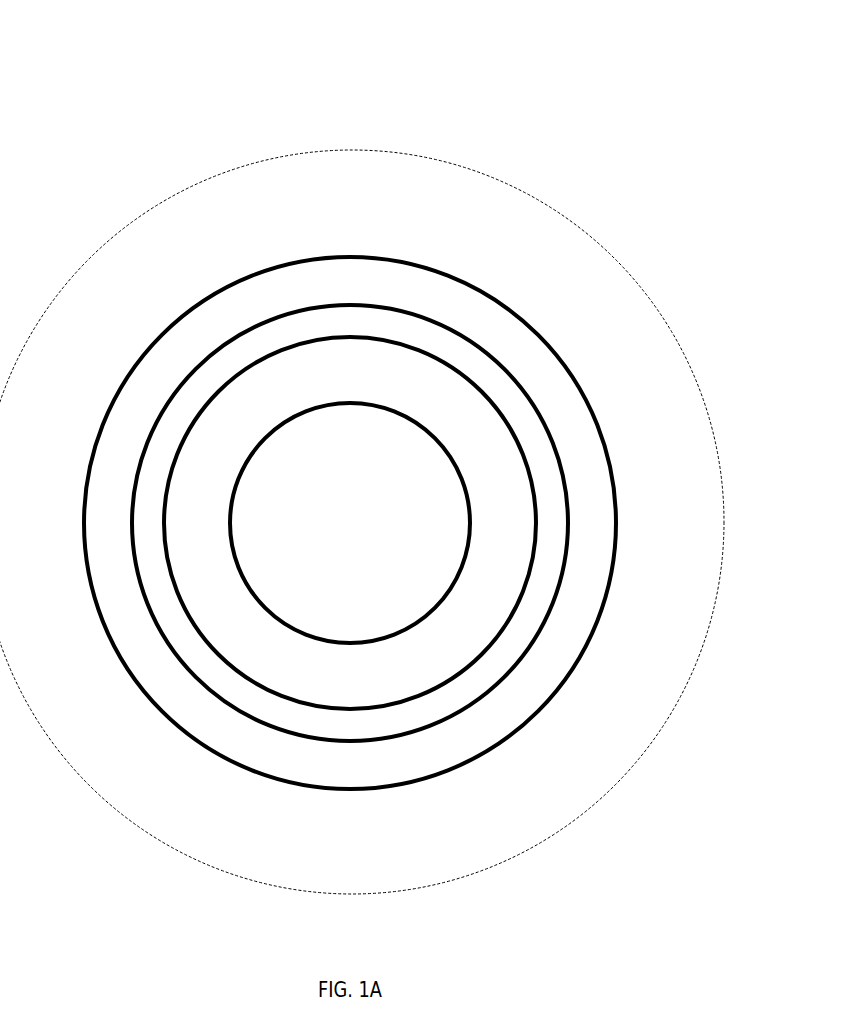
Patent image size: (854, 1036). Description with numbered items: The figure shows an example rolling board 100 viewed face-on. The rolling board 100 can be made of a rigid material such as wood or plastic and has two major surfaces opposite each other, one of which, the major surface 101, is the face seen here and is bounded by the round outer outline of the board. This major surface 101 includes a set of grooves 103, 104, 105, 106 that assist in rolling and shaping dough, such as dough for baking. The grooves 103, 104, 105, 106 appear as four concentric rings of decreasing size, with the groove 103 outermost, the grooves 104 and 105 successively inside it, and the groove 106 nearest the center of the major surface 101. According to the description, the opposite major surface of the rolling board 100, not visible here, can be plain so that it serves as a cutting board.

The rolling board 100 is at (434, 58).
The major surface 101 is at (177, 221).
The groove 103 is at (430, 271).
The groove 104 is at (403, 315).
The groove 105 is at (423, 354).
The groove 106 is at (408, 418).